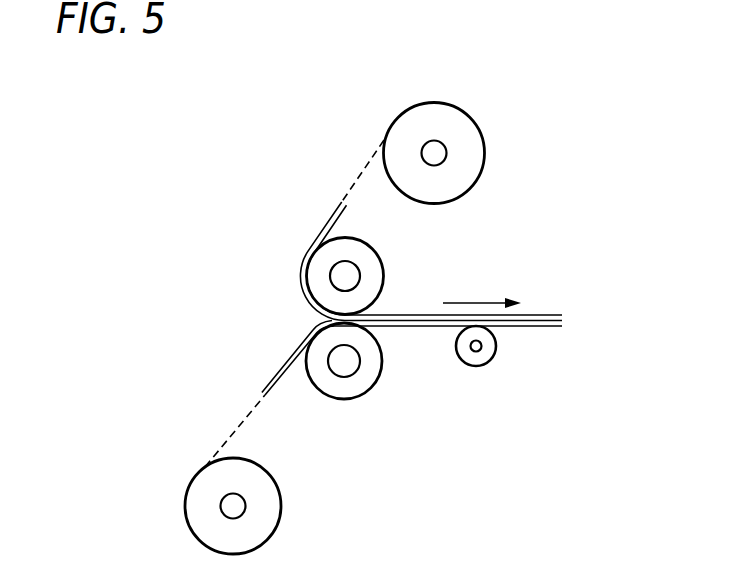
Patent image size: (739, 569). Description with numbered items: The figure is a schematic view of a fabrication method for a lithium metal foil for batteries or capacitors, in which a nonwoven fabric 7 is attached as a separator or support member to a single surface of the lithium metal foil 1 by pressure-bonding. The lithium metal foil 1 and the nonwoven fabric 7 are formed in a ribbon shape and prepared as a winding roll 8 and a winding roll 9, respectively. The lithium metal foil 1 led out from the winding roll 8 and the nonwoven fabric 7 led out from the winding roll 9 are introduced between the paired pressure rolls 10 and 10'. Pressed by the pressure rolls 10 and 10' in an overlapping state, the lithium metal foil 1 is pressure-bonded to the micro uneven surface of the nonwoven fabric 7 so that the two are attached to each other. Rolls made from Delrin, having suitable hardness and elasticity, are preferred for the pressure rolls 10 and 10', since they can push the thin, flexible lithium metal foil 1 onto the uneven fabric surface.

The lithium metal foil 1 is at (367, 160).
The nonwoven fabric 7 is at (252, 412).
The winding roll 8 is at (467, 148).
The winding roll 9 is at (265, 525).
The pressure roll 10 is at (350, 398).
The pressure roll 10' is at (388, 274).